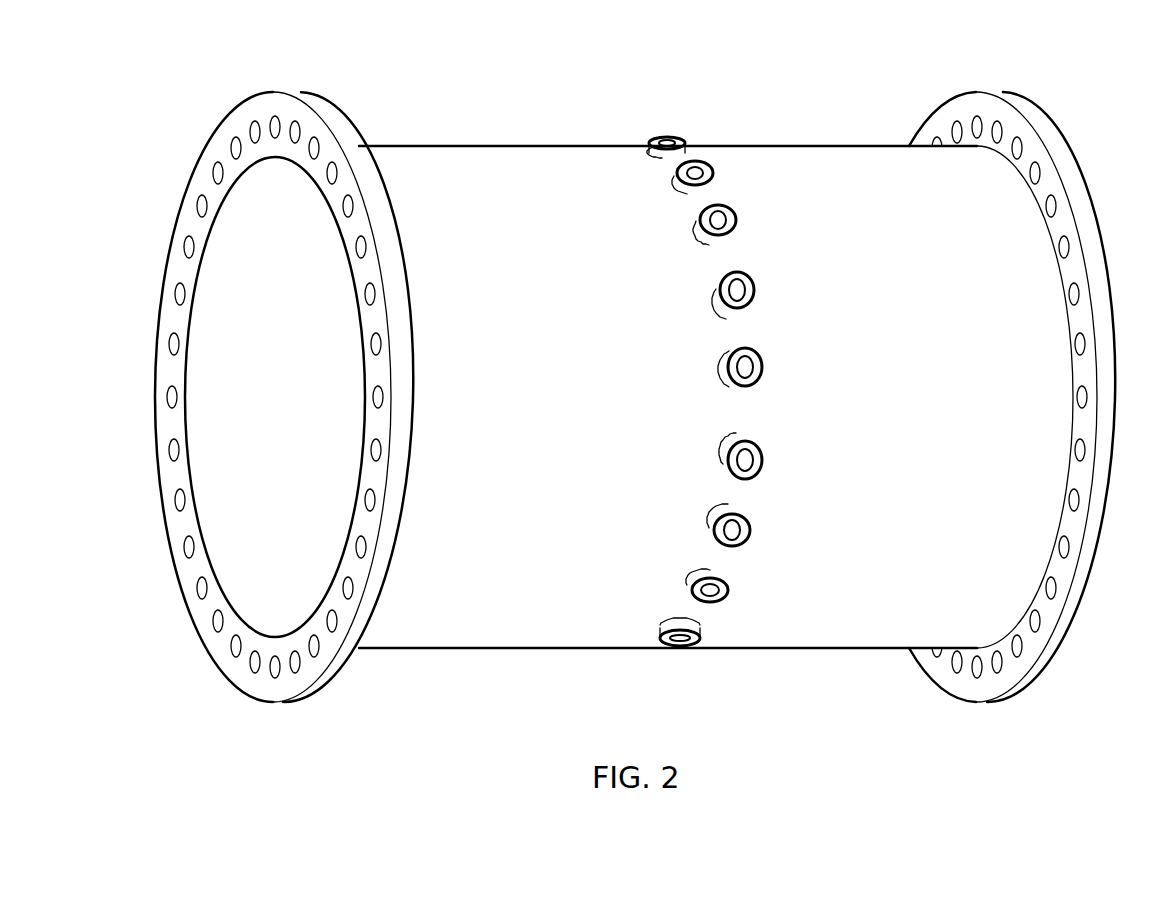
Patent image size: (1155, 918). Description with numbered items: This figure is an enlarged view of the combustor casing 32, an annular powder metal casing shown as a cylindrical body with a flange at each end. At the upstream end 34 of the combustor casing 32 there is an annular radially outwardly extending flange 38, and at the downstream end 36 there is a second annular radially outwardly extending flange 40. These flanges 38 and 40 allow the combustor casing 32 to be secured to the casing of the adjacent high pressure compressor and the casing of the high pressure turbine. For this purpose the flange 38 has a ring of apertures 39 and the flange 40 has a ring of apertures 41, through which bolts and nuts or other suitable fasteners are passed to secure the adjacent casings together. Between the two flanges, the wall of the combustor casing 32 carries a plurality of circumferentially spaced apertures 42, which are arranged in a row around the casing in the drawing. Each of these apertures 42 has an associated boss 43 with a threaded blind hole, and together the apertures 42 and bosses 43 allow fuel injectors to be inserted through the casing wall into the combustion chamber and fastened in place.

The combustor casing 32 is at (778, 146).
The upstream end 34 is at (292, 391).
The downstream end 36 is at (983, 373).
The flange 38 is at (268, 103).
The apertures 39 is at (315, 650).
The flange 40 is at (958, 100).
The apertures 41 is at (1019, 146).
The apertures 42 is at (712, 421).
The bosses 43 is at (738, 204).